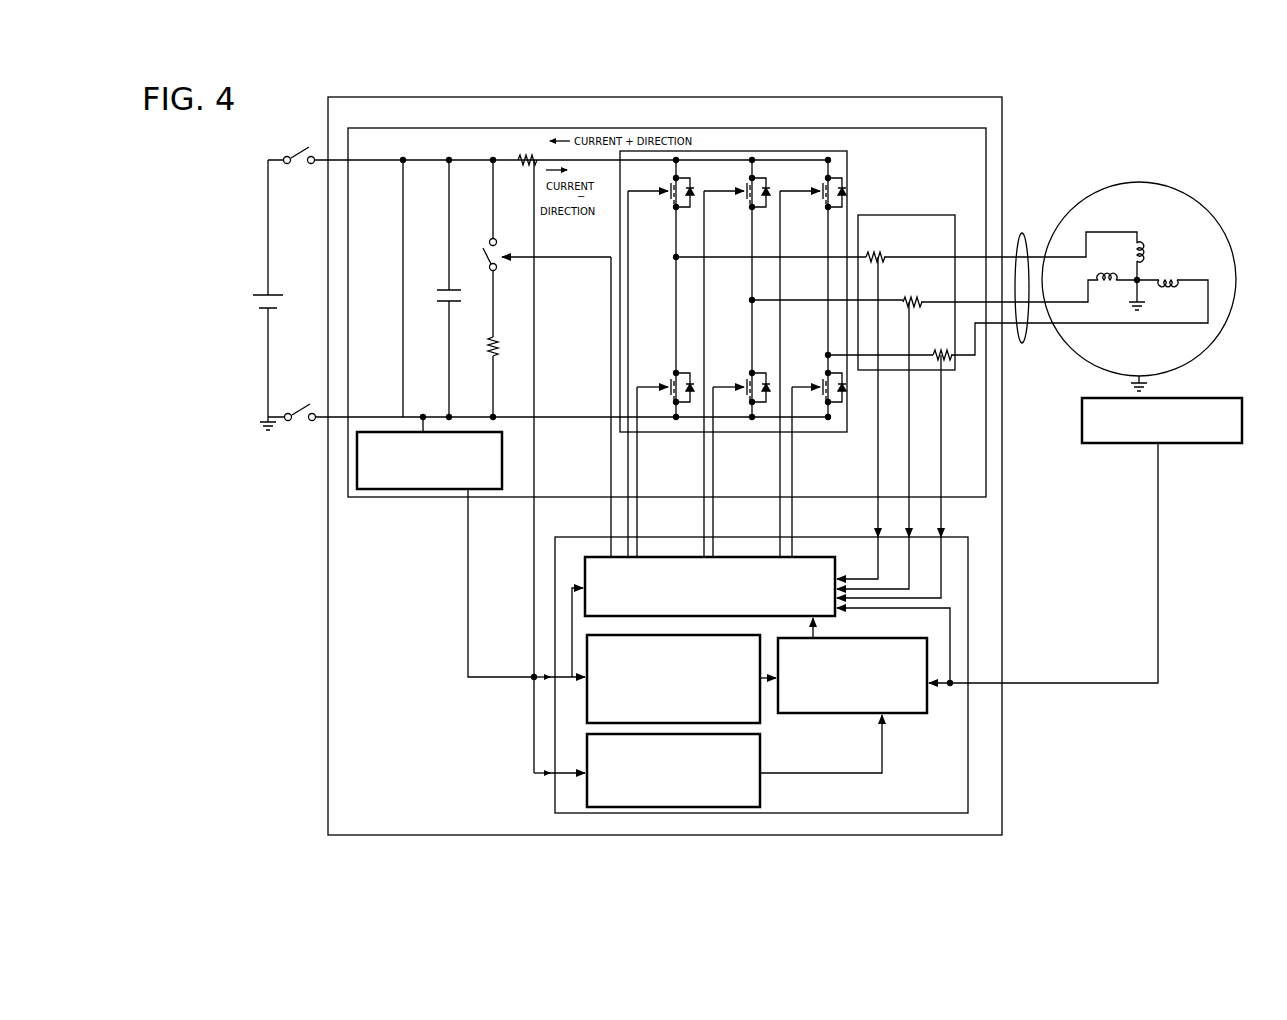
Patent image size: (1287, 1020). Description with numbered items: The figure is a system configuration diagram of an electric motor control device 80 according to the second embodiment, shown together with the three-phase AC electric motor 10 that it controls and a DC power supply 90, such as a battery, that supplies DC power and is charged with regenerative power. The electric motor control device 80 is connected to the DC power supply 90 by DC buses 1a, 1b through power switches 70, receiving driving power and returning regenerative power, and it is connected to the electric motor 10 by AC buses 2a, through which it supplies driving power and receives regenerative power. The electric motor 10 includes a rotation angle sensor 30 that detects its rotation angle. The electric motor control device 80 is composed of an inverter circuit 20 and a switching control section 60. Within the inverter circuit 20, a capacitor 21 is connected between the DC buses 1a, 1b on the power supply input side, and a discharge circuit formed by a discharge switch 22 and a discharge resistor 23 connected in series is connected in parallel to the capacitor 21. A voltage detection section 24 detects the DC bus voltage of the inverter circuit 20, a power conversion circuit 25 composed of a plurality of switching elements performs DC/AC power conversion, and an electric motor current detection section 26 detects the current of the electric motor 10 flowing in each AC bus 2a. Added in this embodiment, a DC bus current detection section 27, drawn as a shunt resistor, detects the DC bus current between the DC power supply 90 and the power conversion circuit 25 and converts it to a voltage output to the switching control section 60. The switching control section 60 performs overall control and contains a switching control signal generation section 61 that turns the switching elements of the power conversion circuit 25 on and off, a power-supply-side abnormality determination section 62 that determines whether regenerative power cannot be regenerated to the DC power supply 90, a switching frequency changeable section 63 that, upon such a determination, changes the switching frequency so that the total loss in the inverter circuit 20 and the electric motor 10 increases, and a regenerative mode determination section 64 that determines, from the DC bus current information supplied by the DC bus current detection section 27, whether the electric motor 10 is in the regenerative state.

The electric motor control device 80 is at (403, 97).
The inverter circuit 20 is at (862, 128).
The DC power supply 90 is at (257, 288).
The power switches 70 is at (303, 142).
The DC bus 1a is at (399, 158).
The DC bus 1b is at (399, 411).
The capacitor 21 is at (445, 281).
The discharge switch 22 is at (488, 237).
The discharge resistor 23 is at (491, 332).
The DC bus current detection section 27 is at (515, 156).
The power conversion circuit 25 is at (855, 156).
The electric motor current detection section 26 is at (917, 211).
The electric motor 10 is at (1112, 186).
The AC buses 2a is at (1023, 235).
The rotation angle sensor 30 is at (1079, 413).
The voltage detection section 24 is at (503, 450).
The switching control section 60 is at (571, 532).
The switching control signal generation section 61 is at (585, 570).
The power-supply-side abnormality determination section 62 is at (587, 692).
The switching frequency changeable section 63 is at (778, 647).
The regenerative mode determination section 64 is at (585, 764).